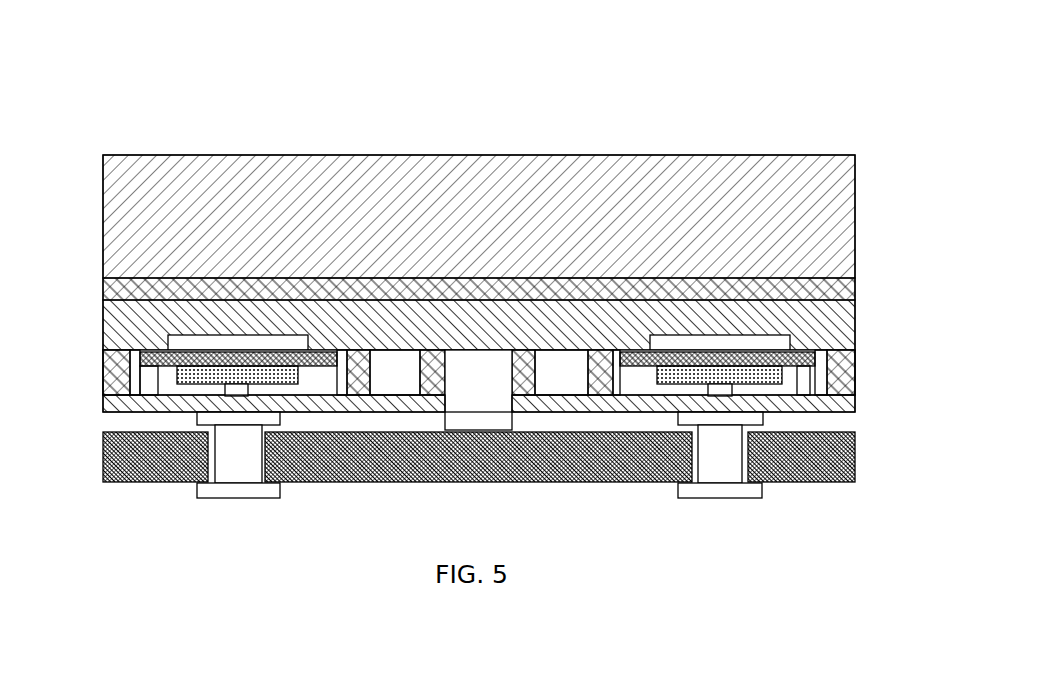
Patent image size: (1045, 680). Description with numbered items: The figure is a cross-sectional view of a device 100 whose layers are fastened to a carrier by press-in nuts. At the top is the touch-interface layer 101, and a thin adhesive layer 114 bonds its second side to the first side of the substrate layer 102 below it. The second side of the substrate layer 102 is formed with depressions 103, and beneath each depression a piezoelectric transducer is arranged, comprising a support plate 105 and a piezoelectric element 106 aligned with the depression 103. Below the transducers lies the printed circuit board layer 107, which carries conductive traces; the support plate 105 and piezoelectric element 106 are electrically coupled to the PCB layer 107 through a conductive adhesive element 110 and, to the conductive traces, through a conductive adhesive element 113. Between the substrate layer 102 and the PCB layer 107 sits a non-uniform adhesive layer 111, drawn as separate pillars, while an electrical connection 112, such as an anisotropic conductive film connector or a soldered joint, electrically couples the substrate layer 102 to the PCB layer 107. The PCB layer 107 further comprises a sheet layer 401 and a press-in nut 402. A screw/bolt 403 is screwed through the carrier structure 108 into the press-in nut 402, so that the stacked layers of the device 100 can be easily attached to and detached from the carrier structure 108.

The device 100 is at (140, 105).
The touch-interface layer 101 is at (104, 197).
The adhesive layer 114 is at (104, 288).
The substrate layer 102 is at (104, 321).
The depression 103 is at (787, 342).
The support plate 105 is at (782, 374).
The piezoelectric element 106 is at (815, 356).
The adhesive layer 111 is at (104, 358).
The conductive adhesive element 113 is at (143, 375).
The printed circuit board layer 107 is at (104, 406).
The sheet layer 401 is at (198, 418).
The carrier structure 108 is at (104, 478).
The conductive adhesive element 110 is at (243, 396).
The electrical connection 112 is at (397, 393).
The press-in nut 402 is at (227, 483).
The screw/bolt 403 is at (228, 489).